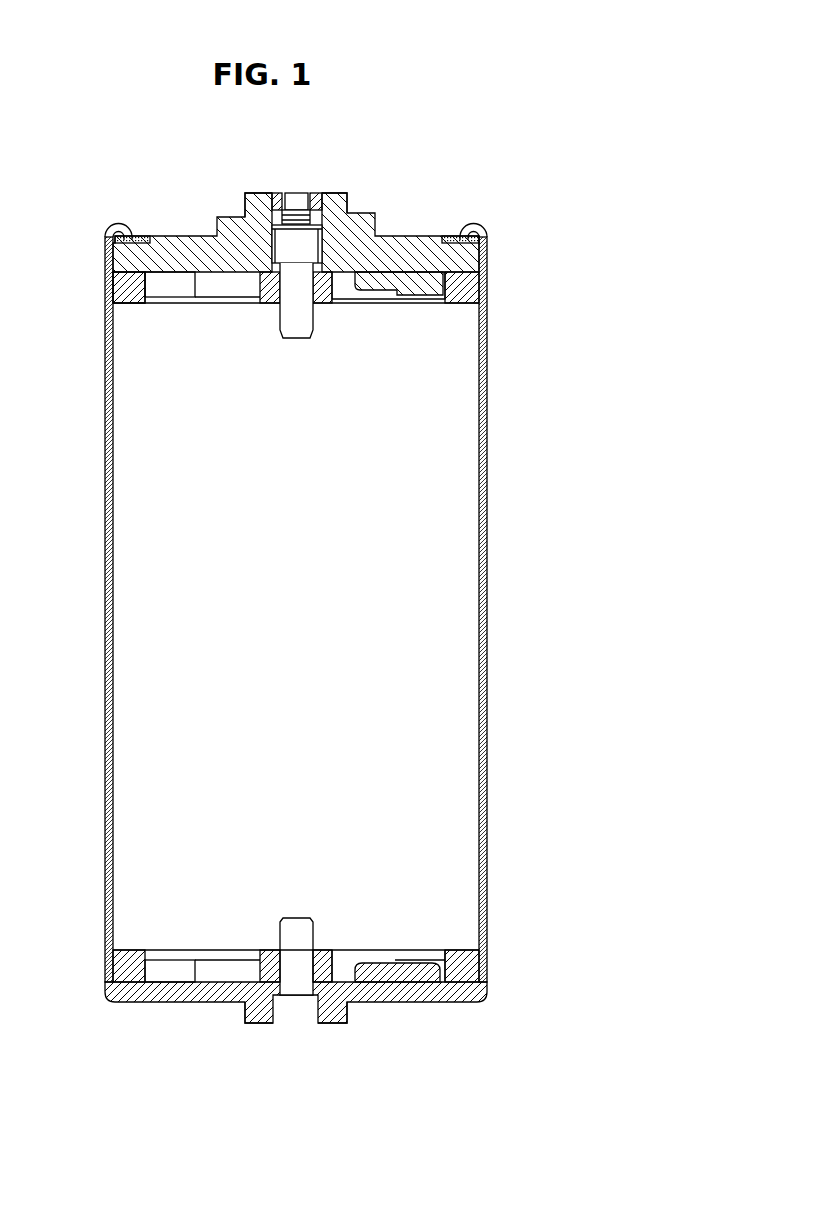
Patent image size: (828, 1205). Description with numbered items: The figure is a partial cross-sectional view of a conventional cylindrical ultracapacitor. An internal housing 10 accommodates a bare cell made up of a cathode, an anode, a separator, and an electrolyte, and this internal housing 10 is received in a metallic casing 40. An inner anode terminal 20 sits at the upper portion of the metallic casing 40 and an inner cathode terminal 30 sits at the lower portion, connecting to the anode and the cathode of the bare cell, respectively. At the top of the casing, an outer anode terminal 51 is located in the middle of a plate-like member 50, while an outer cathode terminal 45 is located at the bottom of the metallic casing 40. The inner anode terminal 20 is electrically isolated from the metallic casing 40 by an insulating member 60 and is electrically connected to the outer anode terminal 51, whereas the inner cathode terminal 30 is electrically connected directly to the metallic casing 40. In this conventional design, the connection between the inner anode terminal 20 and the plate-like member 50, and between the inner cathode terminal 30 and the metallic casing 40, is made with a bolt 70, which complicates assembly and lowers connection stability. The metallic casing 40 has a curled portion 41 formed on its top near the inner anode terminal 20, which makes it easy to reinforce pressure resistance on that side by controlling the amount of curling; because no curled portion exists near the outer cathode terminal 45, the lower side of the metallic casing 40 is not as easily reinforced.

The internal housing 10 is at (121, 468).
The inner anode terminal 20 is at (130, 282).
The inner cathode terminal 30 is at (127, 965).
The metallic casing 40 is at (101, 519).
The curled portion 41 is at (109, 219).
The outer cathode terminal 45 is at (246, 1018).
The plate-like member 50 is at (182, 235).
The outer anode terminal 51 is at (246, 195).
The insulating member 60 is at (113, 285).
The bolt 70 is at (308, 318).